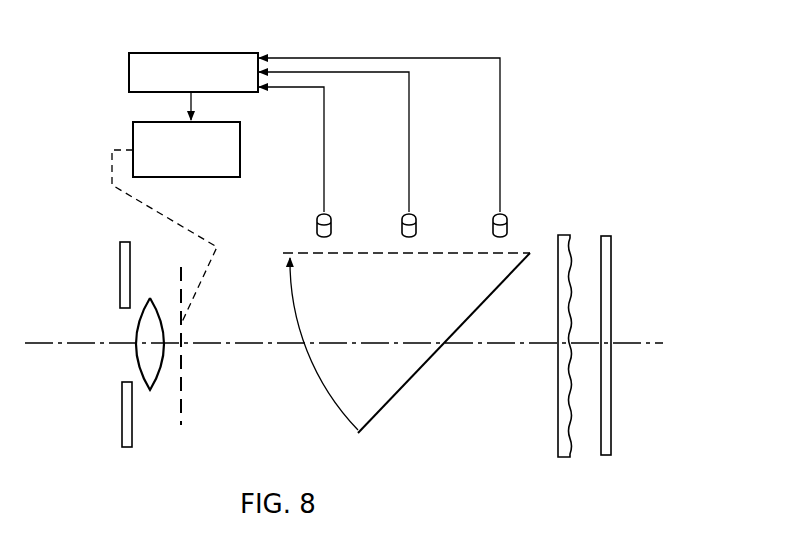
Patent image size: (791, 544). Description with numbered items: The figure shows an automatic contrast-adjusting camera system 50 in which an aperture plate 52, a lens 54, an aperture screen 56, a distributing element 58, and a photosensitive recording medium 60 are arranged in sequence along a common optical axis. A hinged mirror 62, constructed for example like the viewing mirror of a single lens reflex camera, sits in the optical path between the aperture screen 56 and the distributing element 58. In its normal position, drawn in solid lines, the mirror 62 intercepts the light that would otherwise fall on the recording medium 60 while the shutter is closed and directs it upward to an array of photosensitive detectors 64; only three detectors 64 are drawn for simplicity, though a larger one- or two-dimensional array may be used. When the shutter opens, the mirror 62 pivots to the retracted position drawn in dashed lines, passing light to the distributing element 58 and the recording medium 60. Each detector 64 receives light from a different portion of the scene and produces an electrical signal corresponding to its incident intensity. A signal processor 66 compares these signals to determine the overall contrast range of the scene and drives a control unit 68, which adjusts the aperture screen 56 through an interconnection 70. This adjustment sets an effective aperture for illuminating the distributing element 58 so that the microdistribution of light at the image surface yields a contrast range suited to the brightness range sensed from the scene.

The automatic contrast-adjusting camera system 50 is at (546, 207).
The aperture plate 52 is at (123, 288).
The lens 54 is at (145, 353).
The aperture screen 56 is at (182, 393).
The distributing element 58 is at (563, 415).
The photosensitive recording medium 60 is at (611, 420).
The hinged mirror 62 is at (407, 382).
The photosensitive detectors 64 is at (490, 223).
The signal processor 66 is at (167, 52).
The control unit 68 is at (240, 148).
The interconnection 70 is at (178, 220).